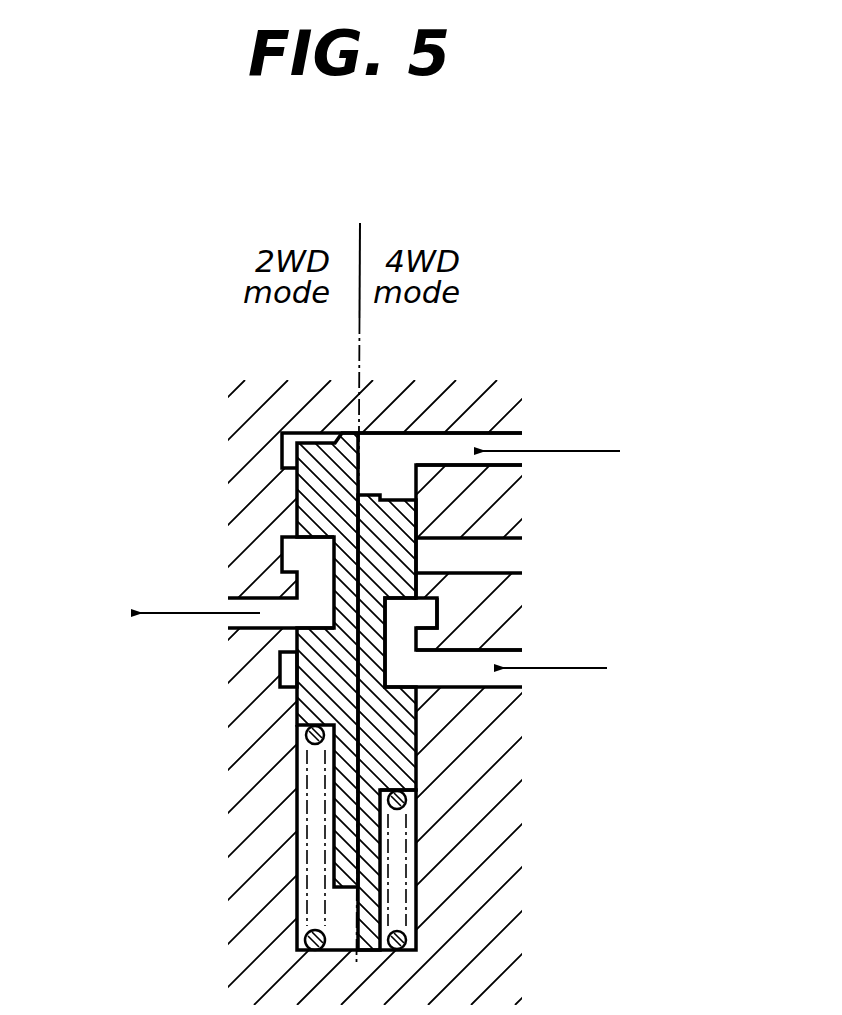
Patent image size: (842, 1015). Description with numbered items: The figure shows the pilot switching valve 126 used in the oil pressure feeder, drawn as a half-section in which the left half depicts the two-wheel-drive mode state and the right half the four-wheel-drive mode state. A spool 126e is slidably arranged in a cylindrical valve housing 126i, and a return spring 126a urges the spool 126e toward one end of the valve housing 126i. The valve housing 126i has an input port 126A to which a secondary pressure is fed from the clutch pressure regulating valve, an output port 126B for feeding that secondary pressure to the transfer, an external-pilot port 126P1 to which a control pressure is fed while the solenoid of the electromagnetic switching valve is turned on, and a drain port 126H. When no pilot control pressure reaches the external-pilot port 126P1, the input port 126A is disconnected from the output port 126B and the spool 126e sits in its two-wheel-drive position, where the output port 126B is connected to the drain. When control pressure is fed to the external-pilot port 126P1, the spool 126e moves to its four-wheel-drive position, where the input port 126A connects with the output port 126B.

The pilot switching valve 126 is at (212, 397).
The external-pilot port 126P1 is at (447, 447).
The output port 126B is at (270, 608).
The drain port 126H is at (477, 557).
The input port 126A is at (458, 668).
The cylindrical valve housing 126i is at (248, 672).
The spool 126e is at (294, 707).
The return spring 126a is at (296, 790).